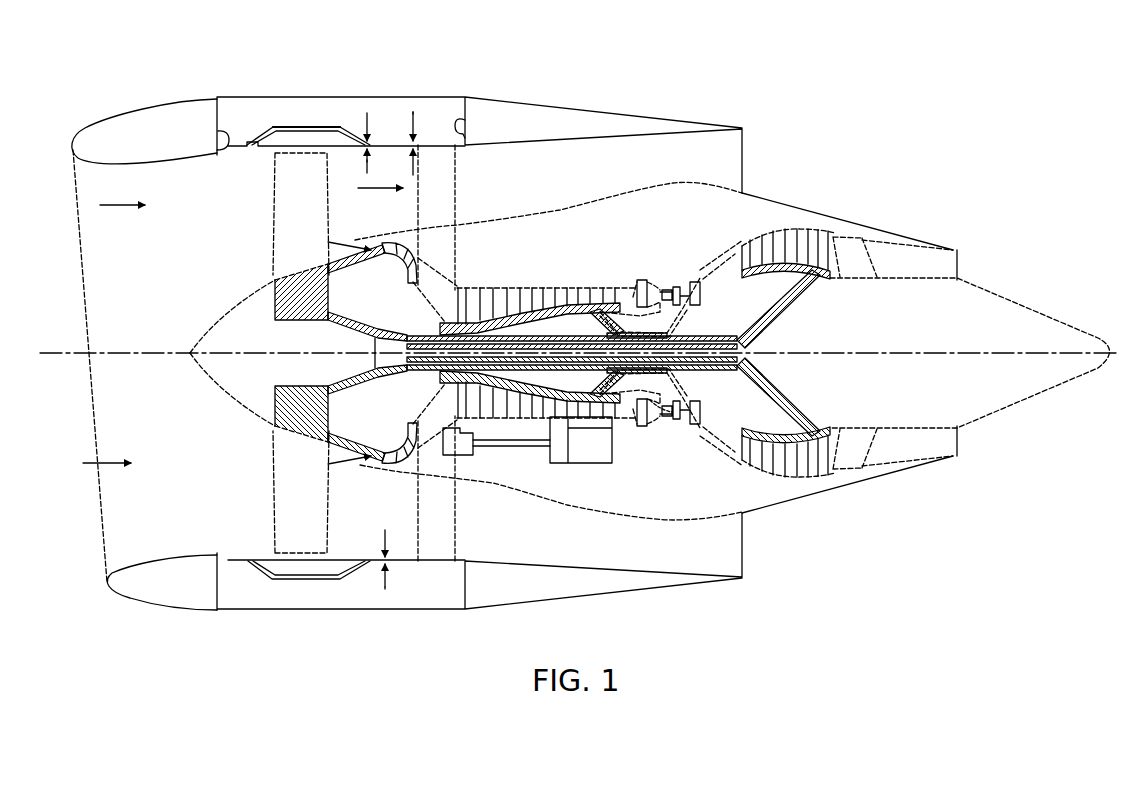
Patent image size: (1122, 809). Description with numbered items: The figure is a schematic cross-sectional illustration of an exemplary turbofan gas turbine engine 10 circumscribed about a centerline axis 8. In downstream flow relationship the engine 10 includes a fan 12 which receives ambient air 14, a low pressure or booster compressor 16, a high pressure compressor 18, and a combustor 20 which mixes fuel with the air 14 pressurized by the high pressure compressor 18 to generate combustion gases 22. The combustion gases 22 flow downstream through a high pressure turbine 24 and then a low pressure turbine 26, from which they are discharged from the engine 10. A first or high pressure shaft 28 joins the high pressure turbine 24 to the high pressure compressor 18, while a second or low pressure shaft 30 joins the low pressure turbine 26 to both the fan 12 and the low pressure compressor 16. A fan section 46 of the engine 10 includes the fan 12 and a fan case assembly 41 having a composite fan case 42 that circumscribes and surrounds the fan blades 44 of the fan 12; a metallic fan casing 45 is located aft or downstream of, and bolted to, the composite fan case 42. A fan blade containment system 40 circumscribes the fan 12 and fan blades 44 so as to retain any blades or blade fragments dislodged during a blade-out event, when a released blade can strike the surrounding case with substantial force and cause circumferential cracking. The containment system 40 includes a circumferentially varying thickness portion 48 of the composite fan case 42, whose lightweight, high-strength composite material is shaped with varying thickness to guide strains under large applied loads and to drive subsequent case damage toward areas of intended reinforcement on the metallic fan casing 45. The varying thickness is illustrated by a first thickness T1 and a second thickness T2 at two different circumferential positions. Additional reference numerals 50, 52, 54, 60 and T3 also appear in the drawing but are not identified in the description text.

The centerline axis 8 is at (864, 353).
The turbofan gas turbine engine 10 is at (800, 148).
The fan 12 is at (267, 277).
The ambient air 14 is at (119, 208).
The low pressure or booster compressor 16 is at (410, 292).
The high pressure compressor 18 is at (475, 288).
The combustor 20 is at (655, 283).
The combustion gases 22 is at (717, 272).
The high pressure turbine 24 is at (676, 290).
The low pressure turbine 26 is at (803, 228).
The high pressure shaft 28 is at (682, 398).
The low pressure shaft 30 is at (765, 397).
The fan blade containment system 40 is at (307, 125).
The fan case assembly 41 is at (363, 90).
The composite fan case 42 is at (400, 138).
The fan blades 44 is at (267, 192).
The metallic fan casing 45 is at (562, 127).
The fan section 46 is at (240, 622).
The circumferentially varying thickness portion 48 is at (377, 557).
The panel thickness 50 is at (389, 570).
The inlet lip 52 is at (217, 132).
The nacelle wall 54 is at (468, 120).
The acoustic liner face sheet 60 is at (317, 127).
The first thickness T1 is at (378, 170).
The second thickness T2 is at (413, 112).
The thickness T3 is at (385, 588).